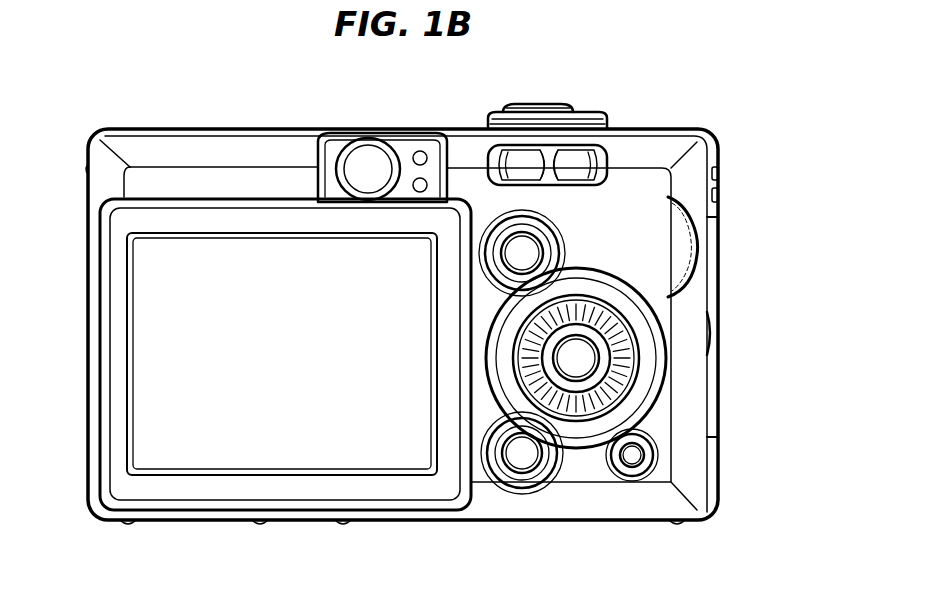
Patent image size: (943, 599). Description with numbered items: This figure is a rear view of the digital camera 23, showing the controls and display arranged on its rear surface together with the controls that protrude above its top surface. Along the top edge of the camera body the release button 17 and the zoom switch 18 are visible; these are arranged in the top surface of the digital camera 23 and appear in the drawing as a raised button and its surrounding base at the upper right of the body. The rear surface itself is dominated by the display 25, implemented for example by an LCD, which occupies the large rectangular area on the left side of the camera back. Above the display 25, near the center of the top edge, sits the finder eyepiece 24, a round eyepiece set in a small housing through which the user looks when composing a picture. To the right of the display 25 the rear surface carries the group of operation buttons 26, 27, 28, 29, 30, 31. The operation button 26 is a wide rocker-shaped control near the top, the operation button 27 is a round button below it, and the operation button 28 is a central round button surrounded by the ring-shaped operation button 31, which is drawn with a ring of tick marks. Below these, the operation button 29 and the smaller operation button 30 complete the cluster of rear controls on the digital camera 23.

The release button 17 is at (546, 106).
The zoom switch 18 is at (592, 122).
The digital camera 23 is at (226, 152).
The finder eyepiece 24 is at (366, 162).
The display 25 is at (357, 452).
The operation button 26 is at (578, 160).
The operation button 27 is at (525, 252).
The operation button 28 is at (585, 357).
The operation button 29 is at (522, 460).
The operation button 30 is at (633, 458).
The operation button 31 is at (613, 383).